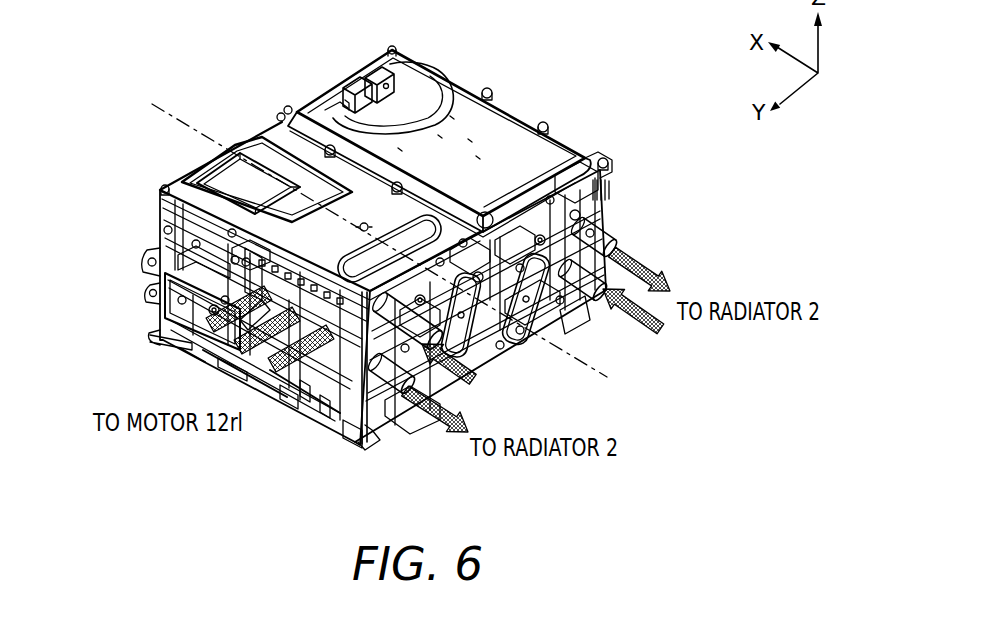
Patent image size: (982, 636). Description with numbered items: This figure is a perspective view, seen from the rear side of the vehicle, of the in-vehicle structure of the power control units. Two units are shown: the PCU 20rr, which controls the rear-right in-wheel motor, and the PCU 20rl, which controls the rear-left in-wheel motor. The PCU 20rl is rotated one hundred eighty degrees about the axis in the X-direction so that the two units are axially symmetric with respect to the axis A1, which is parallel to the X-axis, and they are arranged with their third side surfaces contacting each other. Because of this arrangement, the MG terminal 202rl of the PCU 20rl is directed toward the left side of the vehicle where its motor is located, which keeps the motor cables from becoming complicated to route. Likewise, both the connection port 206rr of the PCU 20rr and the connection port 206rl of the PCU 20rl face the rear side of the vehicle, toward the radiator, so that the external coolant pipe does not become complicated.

The PCU 20rl is at (149, 178).
The PCU 20rr is at (549, 106).
The MG terminal 202rl is at (266, 311).
The connection port 206rr is at (594, 233).
The connection port 206rl is at (400, 382).
The axis A1 is at (365, 231).